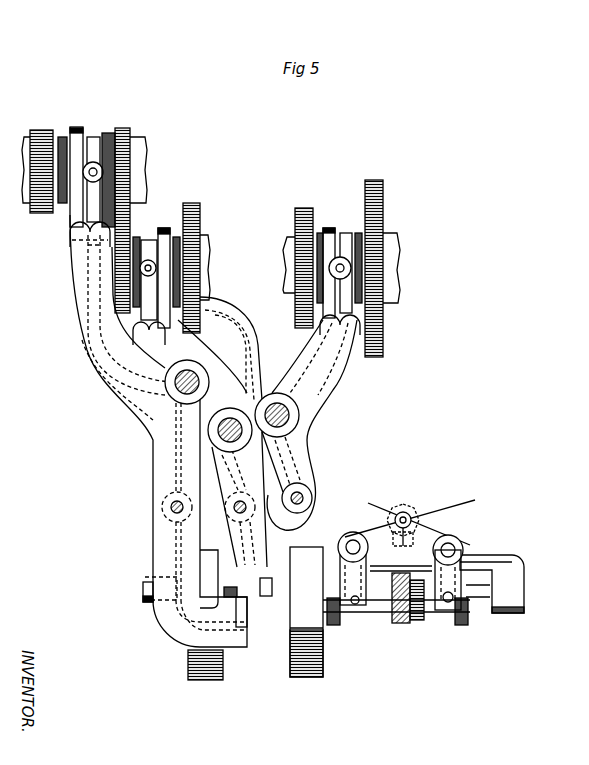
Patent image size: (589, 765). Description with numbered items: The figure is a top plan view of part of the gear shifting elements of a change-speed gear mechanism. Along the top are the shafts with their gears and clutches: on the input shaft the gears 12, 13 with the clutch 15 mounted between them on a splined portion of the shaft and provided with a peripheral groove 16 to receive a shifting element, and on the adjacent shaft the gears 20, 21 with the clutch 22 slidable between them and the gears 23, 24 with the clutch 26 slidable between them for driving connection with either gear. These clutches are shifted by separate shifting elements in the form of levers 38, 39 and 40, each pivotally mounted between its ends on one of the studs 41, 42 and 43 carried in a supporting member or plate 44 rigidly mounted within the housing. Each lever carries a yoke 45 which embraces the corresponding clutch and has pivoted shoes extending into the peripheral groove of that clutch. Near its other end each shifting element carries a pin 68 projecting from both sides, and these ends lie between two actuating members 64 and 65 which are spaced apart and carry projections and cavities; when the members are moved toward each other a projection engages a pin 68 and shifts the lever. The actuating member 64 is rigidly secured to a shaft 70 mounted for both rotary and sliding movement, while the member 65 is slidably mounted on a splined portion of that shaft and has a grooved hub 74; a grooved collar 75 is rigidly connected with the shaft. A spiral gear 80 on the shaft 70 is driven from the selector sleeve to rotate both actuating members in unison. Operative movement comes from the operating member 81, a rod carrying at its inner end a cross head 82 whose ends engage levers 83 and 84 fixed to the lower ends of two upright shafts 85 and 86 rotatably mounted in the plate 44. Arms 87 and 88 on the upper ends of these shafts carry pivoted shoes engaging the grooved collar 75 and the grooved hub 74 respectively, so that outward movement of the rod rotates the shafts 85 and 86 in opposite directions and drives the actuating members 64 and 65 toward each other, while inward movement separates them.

The gear 12 is at (46, 130).
The gear 13 is at (126, 128).
The clutch 15 is at (78, 127).
The peripheral groove 16 is at (94, 137).
The gear 20 is at (112, 291).
The gear 21 is at (200, 218).
The clutch 22 is at (165, 228).
The gear 23 is at (302, 208).
The gear 24 is at (383, 208).
The clutch 26 is at (330, 228).
The lever 38 is at (88, 364).
The lever 39 is at (232, 316).
The lever 40 is at (340, 382).
The stud 41 is at (180, 386).
The stud 42 is at (228, 431).
The stud 43 is at (293, 419).
The supporting plate 44 is at (522, 572).
The yoke 45 is at (80, 206).
The actuating member 64 is at (200, 682).
The actuating member 65 is at (325, 675).
The pin 68 is at (256, 642).
The shaft 70 is at (145, 582).
The grooved hub 74 is at (366, 626).
The grooved collar 75 is at (462, 626).
The spiral gear 80 is at (402, 625).
The operating member 81 is at (411, 549).
The cross head 82 is at (405, 512).
The lever 83 is at (448, 548).
The lever 84 is at (370, 522).
The upright shaft 85 is at (463, 555).
The upright shaft 86 is at (351, 545).
The arm 87 is at (490, 563).
The arm 88 is at (340, 593).